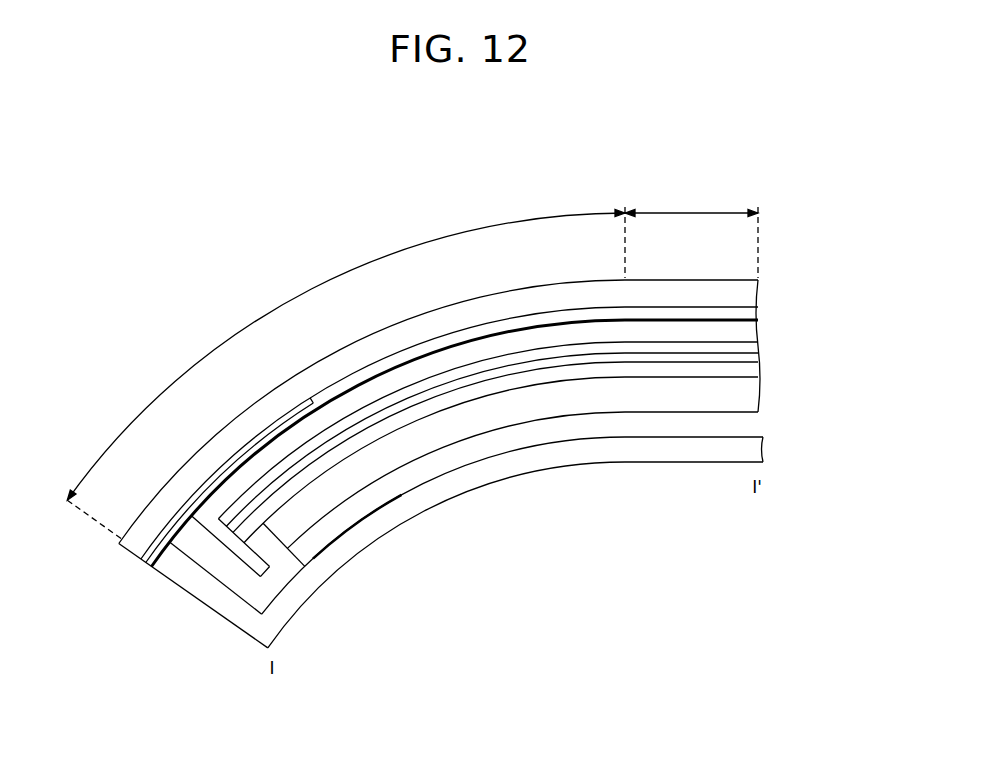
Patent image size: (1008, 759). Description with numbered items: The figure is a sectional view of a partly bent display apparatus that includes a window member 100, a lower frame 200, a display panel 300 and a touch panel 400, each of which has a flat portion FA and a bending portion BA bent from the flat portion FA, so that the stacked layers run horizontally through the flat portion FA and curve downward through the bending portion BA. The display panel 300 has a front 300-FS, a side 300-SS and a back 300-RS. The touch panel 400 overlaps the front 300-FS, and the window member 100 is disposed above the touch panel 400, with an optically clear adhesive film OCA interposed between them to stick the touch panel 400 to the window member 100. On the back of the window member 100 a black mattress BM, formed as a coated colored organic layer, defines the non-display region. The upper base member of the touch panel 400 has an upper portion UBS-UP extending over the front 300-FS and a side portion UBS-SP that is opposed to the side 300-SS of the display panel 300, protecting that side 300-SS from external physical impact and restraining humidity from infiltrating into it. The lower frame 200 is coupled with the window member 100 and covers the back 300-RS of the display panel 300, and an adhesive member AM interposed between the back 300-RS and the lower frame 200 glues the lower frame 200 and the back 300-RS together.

The window member 100 is at (748, 297).
The optically clear adhesive film OCA is at (748, 313).
The touch panel 400 is at (770, 322).
The display panel 300 is at (548, 432).
The front of the display panel 300-FS is at (682, 378).
The back of the display panel 300-RS is at (736, 412).
The side of the display panel 300-SS is at (273, 537).
The lower frame 200 is at (748, 450).
The black mattress BM is at (139, 562).
The upper portion of the upper base member UBS-UP is at (717, 320).
The side portion of the upper base member UBS-SP is at (220, 548).
The adhesive member AM is at (340, 522).
The flat portion FA is at (691, 232).
The bending portion BA is at (346, 375).